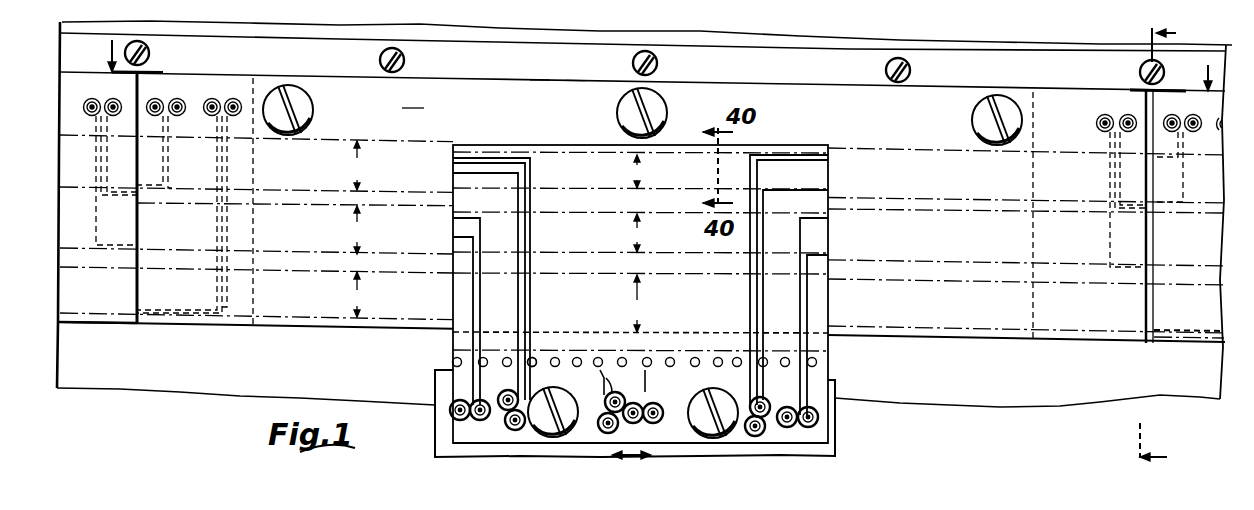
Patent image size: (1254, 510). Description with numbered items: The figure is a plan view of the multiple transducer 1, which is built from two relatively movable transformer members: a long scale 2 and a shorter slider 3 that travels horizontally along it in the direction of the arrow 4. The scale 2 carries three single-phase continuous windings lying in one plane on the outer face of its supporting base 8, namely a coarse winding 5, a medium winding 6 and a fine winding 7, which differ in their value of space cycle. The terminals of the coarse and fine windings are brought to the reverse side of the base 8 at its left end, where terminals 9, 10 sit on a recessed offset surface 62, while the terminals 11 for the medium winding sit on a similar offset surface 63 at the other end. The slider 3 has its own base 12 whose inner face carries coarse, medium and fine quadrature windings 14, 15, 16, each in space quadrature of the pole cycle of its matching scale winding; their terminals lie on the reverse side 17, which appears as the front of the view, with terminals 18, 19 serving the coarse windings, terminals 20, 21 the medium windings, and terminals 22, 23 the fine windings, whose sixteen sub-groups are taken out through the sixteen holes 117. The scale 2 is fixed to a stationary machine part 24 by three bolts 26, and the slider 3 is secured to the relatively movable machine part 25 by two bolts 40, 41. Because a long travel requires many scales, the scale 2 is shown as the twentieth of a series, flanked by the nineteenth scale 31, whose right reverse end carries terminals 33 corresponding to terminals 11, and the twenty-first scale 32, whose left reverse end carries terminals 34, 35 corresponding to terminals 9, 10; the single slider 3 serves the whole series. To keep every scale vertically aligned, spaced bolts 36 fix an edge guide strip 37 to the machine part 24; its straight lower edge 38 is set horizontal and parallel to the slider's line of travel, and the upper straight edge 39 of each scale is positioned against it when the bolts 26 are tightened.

The multiple transducer 1 is at (757, 68).
The scale 2 is at (327, 327).
The slider 3 is at (446, 344).
The arrow 4 is at (632, 459).
The coarse winding 5 is at (343, 136).
The medium winding 6 is at (318, 250).
The fine winding 7 is at (282, 324).
The supporting base 8 is at (460, 80).
The terminals 9 is at (177, 100).
The terminals 10 is at (232, 99).
The terminals 11 is at (1126, 113).
The slider base 12 is at (740, 444).
The coarse quadrature windings 14 is at (590, 190).
The medium quadrature windings 15 is at (585, 254).
The fine quadrature windings 16 is at (690, 274).
The reverse side of slider base 17 is at (688, 387).
The terminal 18 is at (505, 414).
The terminal 19 is at (762, 427).
The terminal 20 is at (452, 413).
The terminal 21 is at (808, 432).
The terminal 22 is at (618, 426).
The terminal 23 is at (660, 423).
The machine part 24 is at (198, 390).
The machine part 25 is at (833, 432).
The bolts 26 is at (313, 110).
The nineteenth scale 31 is at (103, 324).
The twenty-first scale 32 is at (1182, 345).
The terminals 33 is at (112, 98).
The terminals 34 is at (1192, 113).
The terminals 35 is at (1222, 118).
The bolts 36 is at (149, 53).
The edge guide strip 37 is at (848, 52).
The lower edge 38 is at (540, 80).
The upper straight edge 39 is at (575, 81).
The bolt 40 is at (560, 438).
The bolt 41 is at (715, 438).
The offset surface 62 is at (253, 78).
The offset surface 63 is at (1035, 95).
The holes 117 is at (535, 367).